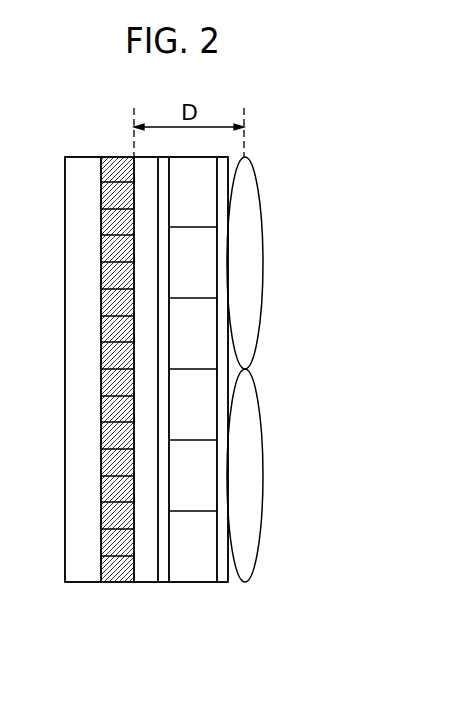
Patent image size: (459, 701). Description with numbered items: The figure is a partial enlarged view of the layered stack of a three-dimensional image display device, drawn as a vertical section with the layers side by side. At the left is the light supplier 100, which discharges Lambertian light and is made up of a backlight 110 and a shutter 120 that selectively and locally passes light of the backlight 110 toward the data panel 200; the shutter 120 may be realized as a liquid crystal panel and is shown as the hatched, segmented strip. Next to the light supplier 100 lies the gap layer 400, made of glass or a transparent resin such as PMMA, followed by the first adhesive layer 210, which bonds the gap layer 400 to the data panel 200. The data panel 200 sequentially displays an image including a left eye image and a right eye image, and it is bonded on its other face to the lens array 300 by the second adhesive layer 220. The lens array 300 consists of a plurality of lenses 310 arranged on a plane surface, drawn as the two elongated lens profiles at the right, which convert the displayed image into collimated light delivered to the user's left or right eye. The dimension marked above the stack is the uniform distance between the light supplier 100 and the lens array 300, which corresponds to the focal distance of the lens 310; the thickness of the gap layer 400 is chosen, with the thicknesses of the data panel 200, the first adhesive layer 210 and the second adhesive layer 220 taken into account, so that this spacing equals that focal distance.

The light supplier 100 is at (84, 424).
The backlight 110 is at (76, 582).
The shutter 120 is at (110, 582).
The gap layer 400 is at (143, 582).
The first adhesive layer 210 is at (168, 582).
The data panel 200 is at (195, 582).
The second adhesive layer 220 is at (223, 582).
The lens array 300 is at (289, 372).
The lens 310 is at (248, 553).